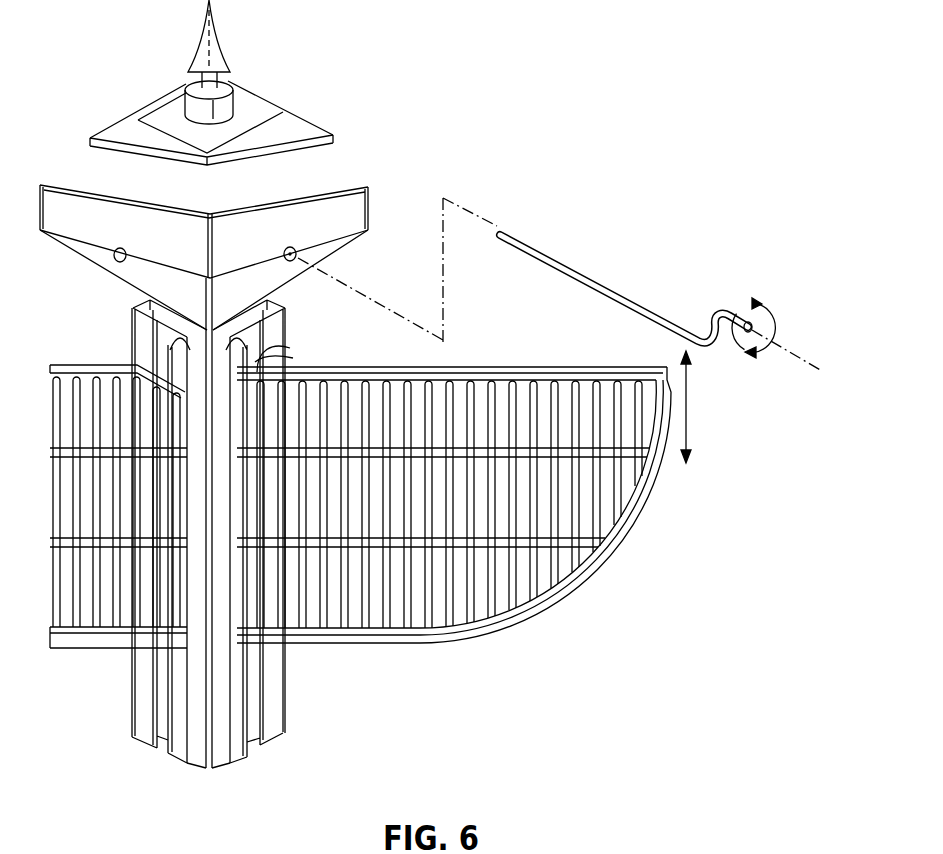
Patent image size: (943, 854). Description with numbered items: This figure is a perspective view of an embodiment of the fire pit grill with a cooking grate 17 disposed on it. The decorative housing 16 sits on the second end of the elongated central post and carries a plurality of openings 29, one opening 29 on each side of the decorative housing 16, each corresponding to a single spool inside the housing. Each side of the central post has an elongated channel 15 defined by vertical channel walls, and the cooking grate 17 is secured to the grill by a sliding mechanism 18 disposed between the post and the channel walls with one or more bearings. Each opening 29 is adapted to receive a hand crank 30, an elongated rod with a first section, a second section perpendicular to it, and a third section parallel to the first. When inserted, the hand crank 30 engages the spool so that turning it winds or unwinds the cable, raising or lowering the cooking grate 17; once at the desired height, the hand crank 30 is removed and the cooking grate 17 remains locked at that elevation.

The elongated channel 15 is at (275, 338).
The decorative housing 16 is at (330, 176).
The cooking grate 17 is at (614, 550).
The sliding mechanism 18 is at (265, 355).
The opening 29 is at (297, 251).
The hand crank 30 is at (615, 285).